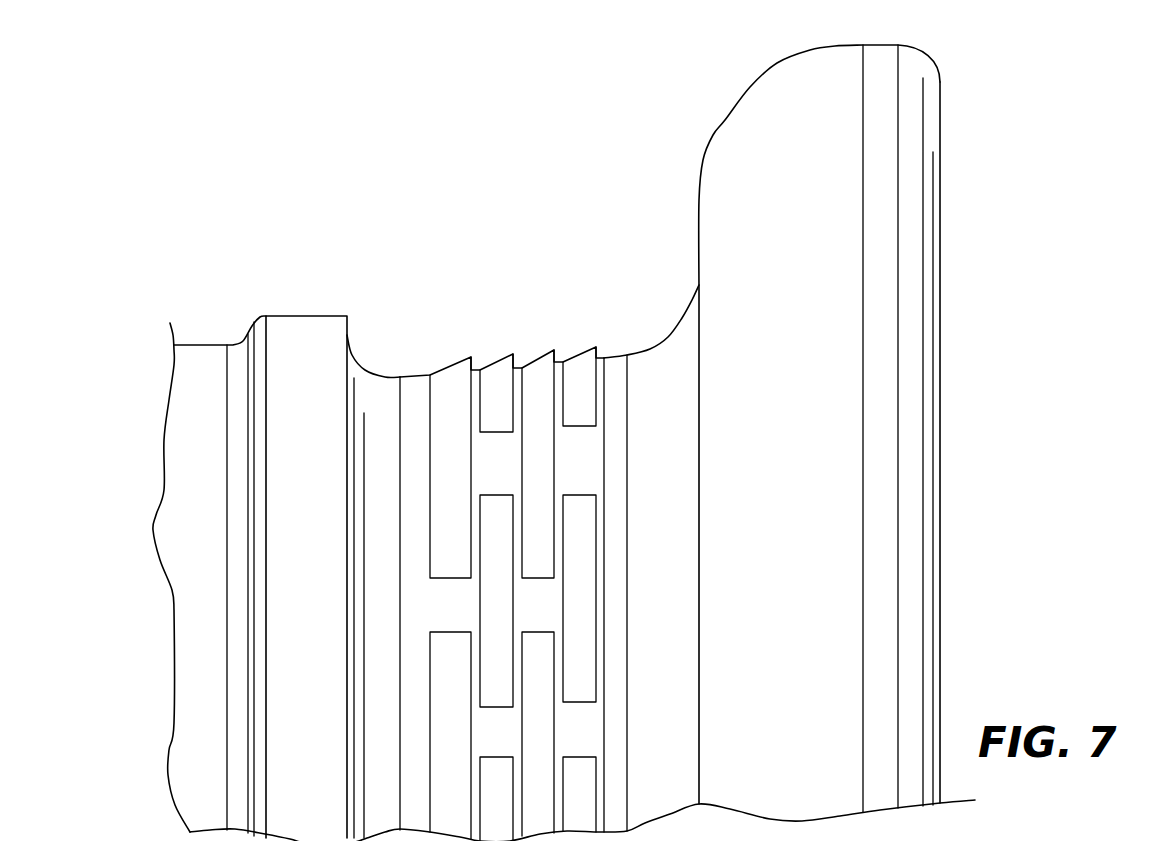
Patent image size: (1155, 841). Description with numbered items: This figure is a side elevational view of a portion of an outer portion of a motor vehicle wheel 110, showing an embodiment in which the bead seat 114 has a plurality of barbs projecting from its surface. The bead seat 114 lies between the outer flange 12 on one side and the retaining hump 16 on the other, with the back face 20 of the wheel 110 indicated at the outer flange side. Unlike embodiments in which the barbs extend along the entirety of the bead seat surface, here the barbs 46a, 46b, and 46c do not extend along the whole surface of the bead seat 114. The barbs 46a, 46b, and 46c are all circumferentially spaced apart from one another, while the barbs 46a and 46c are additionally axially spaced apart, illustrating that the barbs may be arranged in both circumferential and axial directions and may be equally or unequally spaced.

The outer flange 12 is at (725, 120).
The retaining hump 16 is at (306, 316).
The back face 20 is at (966, 392).
The barb 46a is at (582, 370).
The barb 46b is at (580, 540).
The barb 46c is at (545, 728).
The wheel 110 is at (523, 130).
The bead seat 114 is at (503, 242).